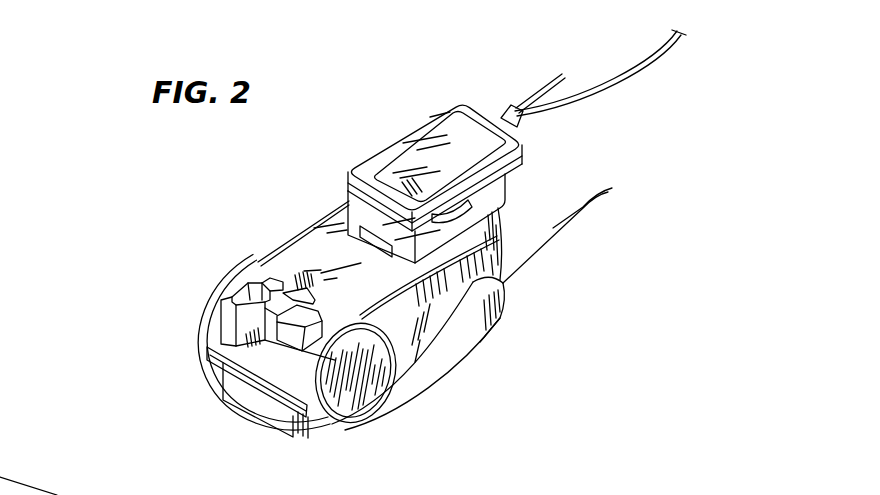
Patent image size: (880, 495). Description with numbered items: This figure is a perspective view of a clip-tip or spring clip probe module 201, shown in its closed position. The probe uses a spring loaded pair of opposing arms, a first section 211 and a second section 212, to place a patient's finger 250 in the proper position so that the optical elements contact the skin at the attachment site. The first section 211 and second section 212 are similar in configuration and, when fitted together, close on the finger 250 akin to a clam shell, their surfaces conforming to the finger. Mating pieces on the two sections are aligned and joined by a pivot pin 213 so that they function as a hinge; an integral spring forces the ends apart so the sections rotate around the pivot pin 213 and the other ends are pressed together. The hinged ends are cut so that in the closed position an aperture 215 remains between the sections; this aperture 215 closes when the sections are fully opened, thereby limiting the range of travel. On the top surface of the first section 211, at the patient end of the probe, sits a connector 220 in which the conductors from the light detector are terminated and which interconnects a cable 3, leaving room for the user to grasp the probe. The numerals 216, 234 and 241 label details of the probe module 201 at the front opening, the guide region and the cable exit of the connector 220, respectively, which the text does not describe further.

The connector assembly 201 is at (286, 212).
The housing front opening 216 is at (213, 292).
The pivot pin 213 is at (347, 420).
The guide rails 234 is at (268, 285).
The aperture 215 is at (270, 376).
The connector 220 is at (387, 163).
The cable gland 241 is at (510, 112).
The patient's finger 250 is at (522, 105).
The cable 3 is at (625, 84).
The first section 211 is at (507, 238).
The second section 212 is at (460, 313).